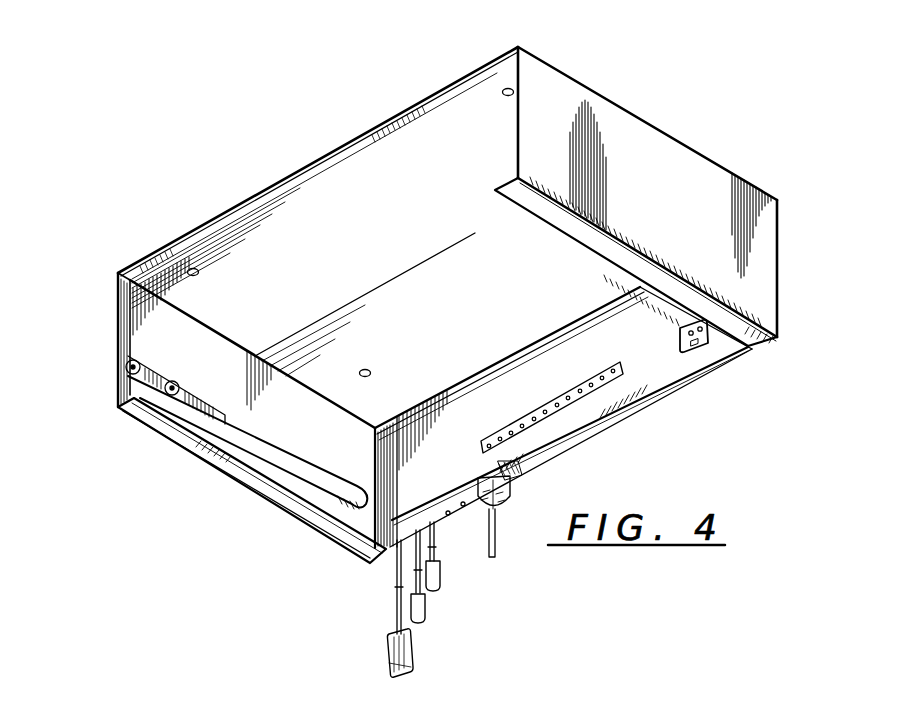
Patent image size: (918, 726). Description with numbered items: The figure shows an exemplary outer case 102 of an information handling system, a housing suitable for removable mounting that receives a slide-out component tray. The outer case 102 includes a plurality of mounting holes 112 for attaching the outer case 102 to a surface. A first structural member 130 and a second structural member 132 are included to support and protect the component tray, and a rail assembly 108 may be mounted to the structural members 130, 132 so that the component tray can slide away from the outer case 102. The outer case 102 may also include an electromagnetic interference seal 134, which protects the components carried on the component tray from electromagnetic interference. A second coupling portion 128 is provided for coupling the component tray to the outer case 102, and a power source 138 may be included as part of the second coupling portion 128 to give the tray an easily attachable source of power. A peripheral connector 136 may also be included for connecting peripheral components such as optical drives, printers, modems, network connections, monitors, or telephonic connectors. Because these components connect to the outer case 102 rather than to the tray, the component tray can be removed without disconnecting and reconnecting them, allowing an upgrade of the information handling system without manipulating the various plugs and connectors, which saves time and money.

The outer case 102 is at (667, 156).
The rail assembly 108 is at (290, 460).
The mounting holes 112 is at (506, 88).
The second coupling portion 128 is at (583, 398).
The first structural member 130 is at (115, 321).
The second structural member 132 is at (763, 259).
The electromagnetic interference (EMI) seal 134 is at (305, 172).
The peripheral connector 136 is at (522, 477).
The power source 138 is at (692, 346).